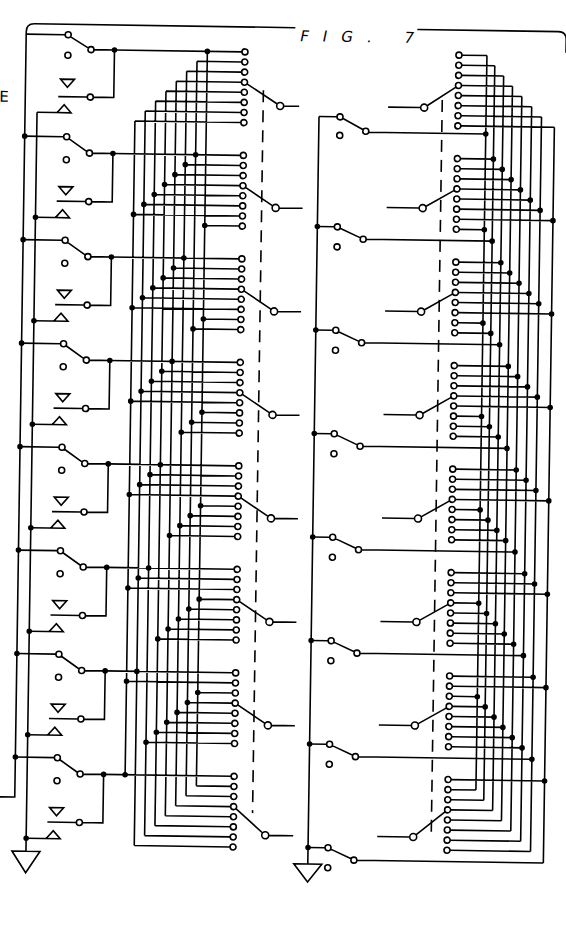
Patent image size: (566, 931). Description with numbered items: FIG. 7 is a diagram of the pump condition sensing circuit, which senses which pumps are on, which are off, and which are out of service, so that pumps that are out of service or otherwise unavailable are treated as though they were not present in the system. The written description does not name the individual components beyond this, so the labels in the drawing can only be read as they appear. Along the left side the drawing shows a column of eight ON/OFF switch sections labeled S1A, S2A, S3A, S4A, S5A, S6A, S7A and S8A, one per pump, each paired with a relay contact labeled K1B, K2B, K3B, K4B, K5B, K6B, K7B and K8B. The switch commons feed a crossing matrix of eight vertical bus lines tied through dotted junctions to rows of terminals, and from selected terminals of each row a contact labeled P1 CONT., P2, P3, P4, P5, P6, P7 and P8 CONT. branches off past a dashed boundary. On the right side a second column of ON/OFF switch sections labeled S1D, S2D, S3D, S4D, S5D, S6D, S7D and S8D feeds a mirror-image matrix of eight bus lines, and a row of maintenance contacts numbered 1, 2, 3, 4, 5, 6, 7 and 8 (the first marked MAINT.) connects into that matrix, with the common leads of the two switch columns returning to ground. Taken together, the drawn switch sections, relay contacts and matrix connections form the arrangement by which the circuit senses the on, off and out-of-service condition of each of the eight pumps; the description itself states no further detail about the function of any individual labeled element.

The channel 1 power switch section A S1A is at (70, 48).
The channel 2 switch section A S2A is at (68, 145).
The channel 3 switch section A S3A is at (67, 249).
The channel 4 switch section A S4A is at (65, 352).
The channel 5 switch section A S5A is at (64, 456).
The channel 6 switch section A S6A is at (62, 559).
The channel 7 switch section A S7A is at (61, 663).
The channel 8 switch section A S8A is at (59, 766).
The relay K1 contact set B K1B is at (75, 81).
The relay K2 contact set B K2B is at (74, 190).
The relay K3 contact set B K3B is at (73, 294).
The relay K4 contact set B K4B is at (71, 397).
The relay K5 contact set B K5B is at (70, 501).
The relay K6 contact set B K6B is at (68, 604).
The relay K7 contact set B K7B is at (67, 708).
The relay K8 contact set B K8B is at (65, 811).
The program 1 control contact P1 is at (301, 97).
The program 2 contact P2 is at (275, 198).
The program 3 contact P3 is at (274, 302).
The program 4 contact P4 is at (272, 405).
The program 5 contact P5 is at (270, 509).
The program 6 contact P6 is at (269, 612).
The program 7 contact P7 is at (267, 716).
The program 8 control contact P8 is at (264, 835).
The channel 1 switch section D S1D is at (402, 136).
The channel 2 switch section D S2D is at (404, 235).
The channel 3 switch section D S3D is at (407, 338).
The channel 4 switch section D S4D is at (410, 442).
The channel 5 switch section D S5D is at (413, 545).
The channel 6 switch section D S6D is at (417, 648).
The channel 7 switch section D S7D is at (420, 752).
The channel 8 switch section D S8D is at (426, 855).
The maintenance selector contact 1 is at (416, 108).
The maintenance selector contact 2 is at (421, 200).
The maintenance selector contact 3 is at (419, 304).
The maintenance selector contact 4 is at (417, 407).
The maintenance selector contact 5 is at (416, 511).
The maintenance selector contact 6 is at (414, 614).
The maintenance selector contact 7 is at (413, 718).
The maintenance selector contact 8 is at (411, 826).